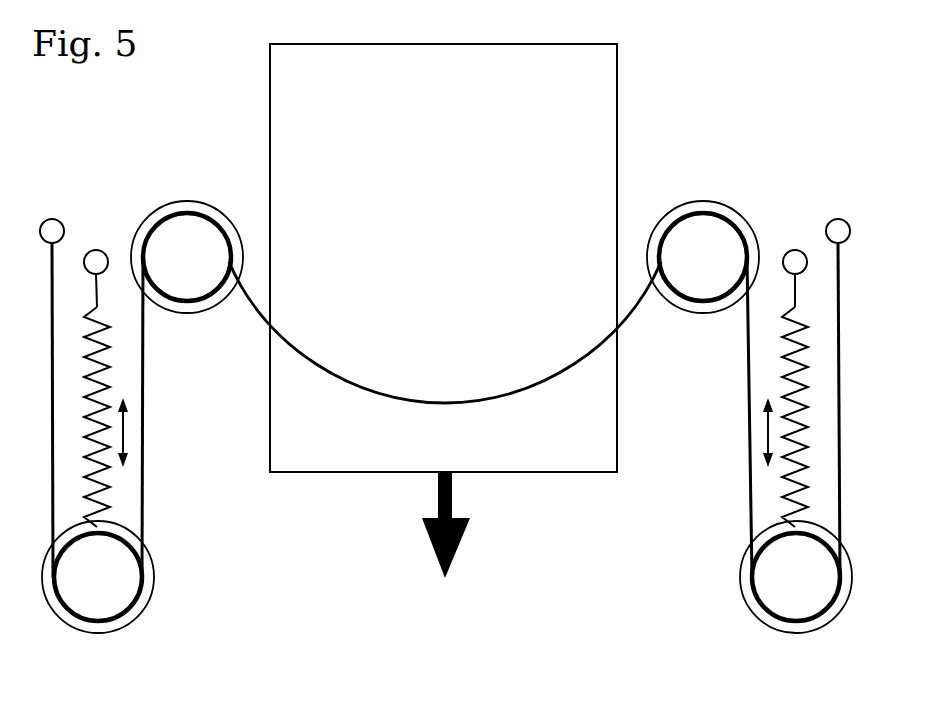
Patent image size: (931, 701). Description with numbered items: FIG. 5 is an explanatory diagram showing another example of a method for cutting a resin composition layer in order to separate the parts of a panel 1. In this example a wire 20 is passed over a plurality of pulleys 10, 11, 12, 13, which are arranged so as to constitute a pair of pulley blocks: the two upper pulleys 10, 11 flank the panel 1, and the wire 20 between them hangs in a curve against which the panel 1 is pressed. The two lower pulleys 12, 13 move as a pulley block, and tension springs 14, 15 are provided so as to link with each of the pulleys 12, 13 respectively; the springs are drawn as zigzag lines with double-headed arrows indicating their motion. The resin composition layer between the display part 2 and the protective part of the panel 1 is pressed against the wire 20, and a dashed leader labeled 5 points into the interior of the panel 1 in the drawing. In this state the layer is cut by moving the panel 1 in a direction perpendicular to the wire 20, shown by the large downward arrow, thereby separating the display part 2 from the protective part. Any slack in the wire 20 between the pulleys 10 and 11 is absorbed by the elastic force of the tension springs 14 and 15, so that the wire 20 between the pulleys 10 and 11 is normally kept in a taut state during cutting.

The panel 1 is at (634, 52).
The display part 2 is at (617, 105).
The adhesive layer 5 is at (583, 175).
The pulley 10 is at (723, 230).
The pulley 11 is at (162, 232).
The pulley 12 is at (763, 588).
The pulley 13 is at (128, 590).
The tension spring 14 is at (800, 375).
The tension spring 15 is at (90, 375).
The wire 20 is at (628, 313).